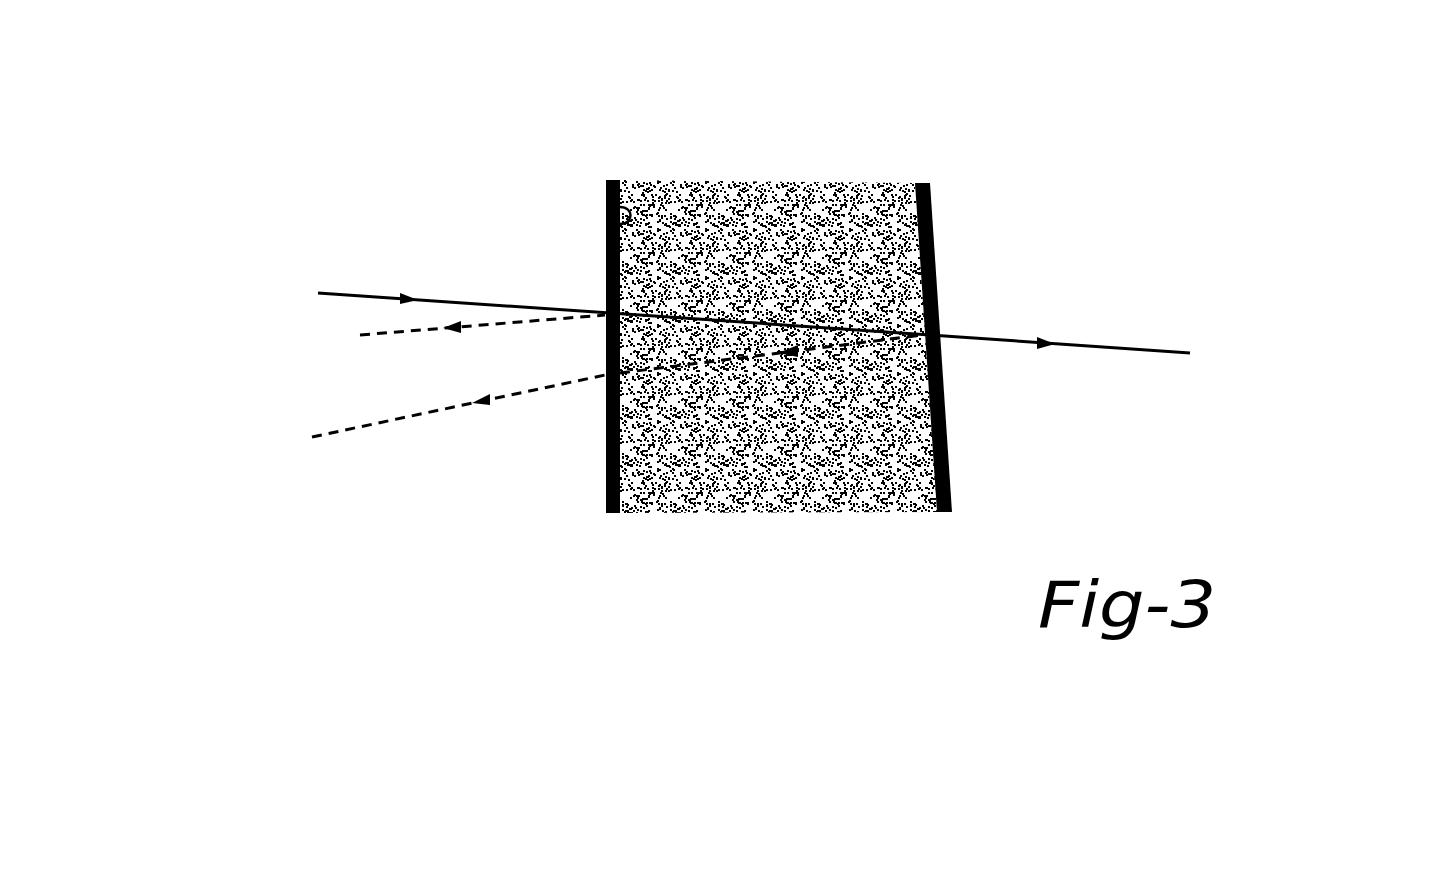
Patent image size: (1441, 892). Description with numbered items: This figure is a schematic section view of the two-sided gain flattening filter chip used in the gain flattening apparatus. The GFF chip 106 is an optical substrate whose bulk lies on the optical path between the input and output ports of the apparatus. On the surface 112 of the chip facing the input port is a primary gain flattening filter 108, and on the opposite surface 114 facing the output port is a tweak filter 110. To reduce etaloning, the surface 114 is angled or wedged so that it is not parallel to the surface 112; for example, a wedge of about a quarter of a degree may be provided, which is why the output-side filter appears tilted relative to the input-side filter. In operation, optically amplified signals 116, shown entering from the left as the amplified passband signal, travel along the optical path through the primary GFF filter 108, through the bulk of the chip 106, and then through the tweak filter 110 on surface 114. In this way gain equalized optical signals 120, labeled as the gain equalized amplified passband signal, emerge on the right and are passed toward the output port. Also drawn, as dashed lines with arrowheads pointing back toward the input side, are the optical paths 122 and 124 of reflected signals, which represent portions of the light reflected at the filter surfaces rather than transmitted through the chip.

The GFF chip 106 is at (720, 181).
The primary gain flattening filter 108 is at (597, 475).
The tweak filter 110 is at (937, 207).
The surface facing input port 112 is at (607, 237).
The surface facing output port 114 is at (923, 490).
The optically amplified signals 116 is at (345, 296).
The gain equalized optical signals 120 is at (1147, 350).
The optical path of reflected signal 122 is at (412, 333).
The optical path of reflected signal 124 is at (440, 410).